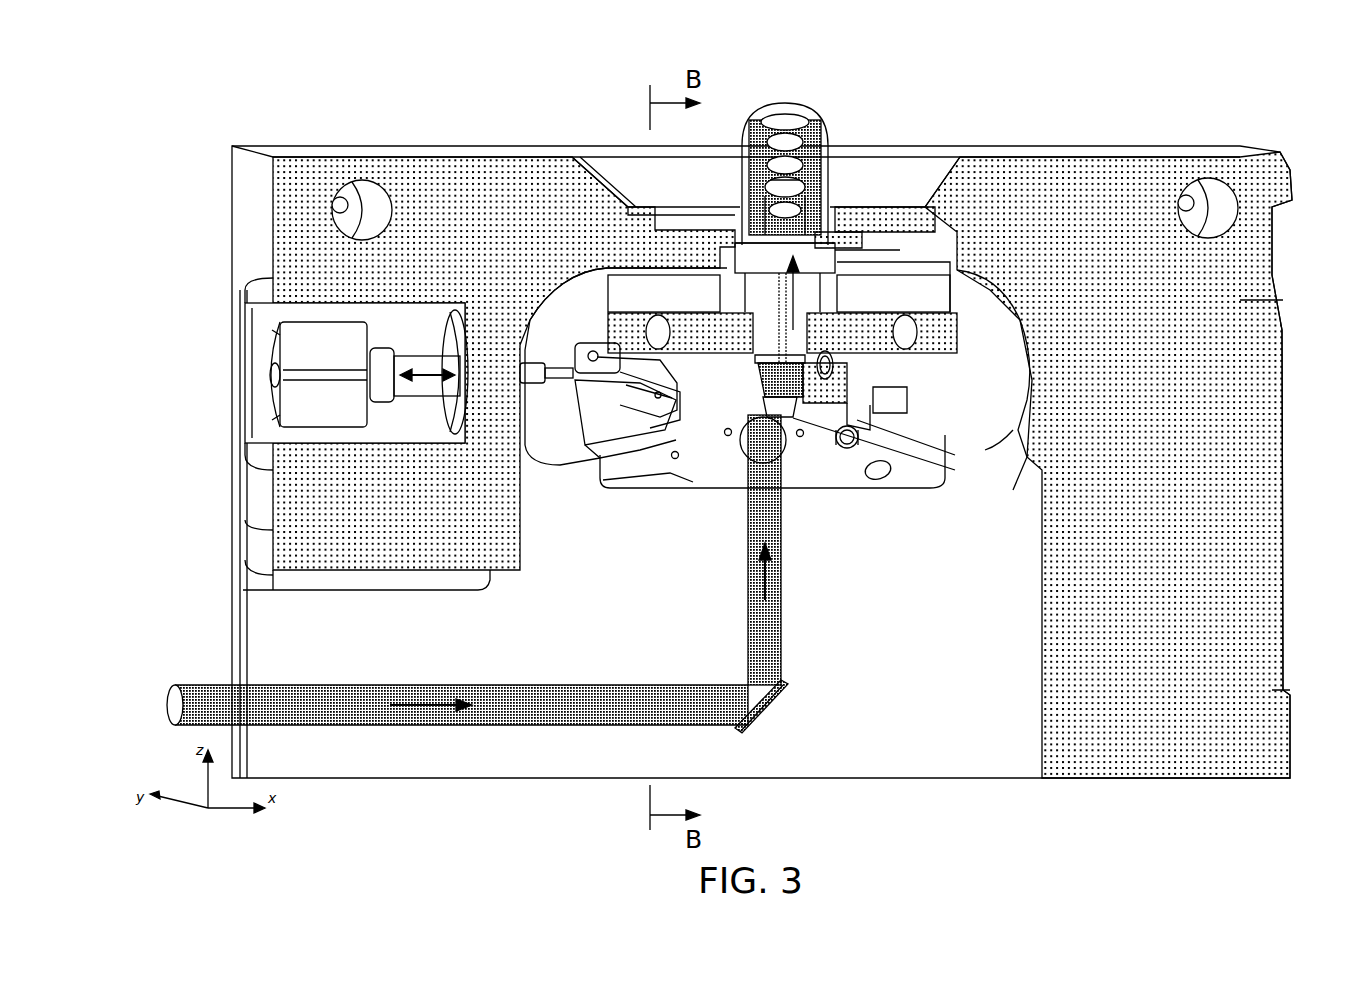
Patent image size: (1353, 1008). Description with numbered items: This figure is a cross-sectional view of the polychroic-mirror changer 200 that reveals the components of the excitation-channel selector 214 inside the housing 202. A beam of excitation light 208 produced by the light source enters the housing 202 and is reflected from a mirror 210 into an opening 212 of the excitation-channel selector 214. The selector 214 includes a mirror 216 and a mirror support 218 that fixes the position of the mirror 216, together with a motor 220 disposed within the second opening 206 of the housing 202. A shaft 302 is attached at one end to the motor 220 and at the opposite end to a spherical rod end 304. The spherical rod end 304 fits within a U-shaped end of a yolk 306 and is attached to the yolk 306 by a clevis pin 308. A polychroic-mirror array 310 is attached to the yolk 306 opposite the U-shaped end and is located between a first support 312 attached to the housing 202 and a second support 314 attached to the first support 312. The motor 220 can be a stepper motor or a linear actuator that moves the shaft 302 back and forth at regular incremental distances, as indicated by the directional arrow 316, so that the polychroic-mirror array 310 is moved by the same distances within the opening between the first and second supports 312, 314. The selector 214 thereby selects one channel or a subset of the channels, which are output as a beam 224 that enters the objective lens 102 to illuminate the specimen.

The polychroic-mirror changer 200 is at (1168, 106).
The housing 202 is at (330, 150).
The second opening 206 is at (260, 330).
The motor 220 is at (272, 398).
The shaft 302 is at (412, 398).
The directional arrow 316 is at (420, 366).
The objective lens 102 is at (830, 130).
The beam 224 is at (806, 243).
The second support 314 is at (628, 282).
The first support 312 is at (680, 305).
The mirror 216 is at (793, 420).
The mirror support 218 is at (835, 448).
The excitation-channel selector 214 is at (840, 505).
The opening 212 is at (742, 448).
The spherical rod end 304 is at (562, 385).
The clevis pin 308 is at (595, 383).
The yolk 306 is at (632, 380).
The polychroic-mirror array 310 is at (668, 425).
The mirror 210 is at (787, 716).
The beam of excitation light 208 is at (188, 718).